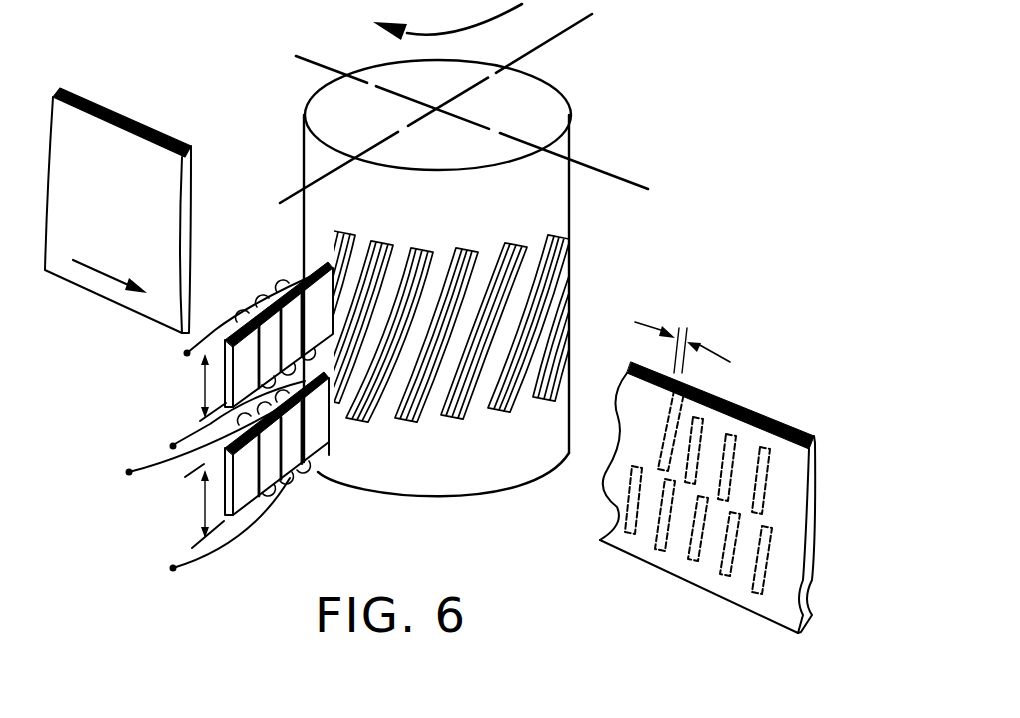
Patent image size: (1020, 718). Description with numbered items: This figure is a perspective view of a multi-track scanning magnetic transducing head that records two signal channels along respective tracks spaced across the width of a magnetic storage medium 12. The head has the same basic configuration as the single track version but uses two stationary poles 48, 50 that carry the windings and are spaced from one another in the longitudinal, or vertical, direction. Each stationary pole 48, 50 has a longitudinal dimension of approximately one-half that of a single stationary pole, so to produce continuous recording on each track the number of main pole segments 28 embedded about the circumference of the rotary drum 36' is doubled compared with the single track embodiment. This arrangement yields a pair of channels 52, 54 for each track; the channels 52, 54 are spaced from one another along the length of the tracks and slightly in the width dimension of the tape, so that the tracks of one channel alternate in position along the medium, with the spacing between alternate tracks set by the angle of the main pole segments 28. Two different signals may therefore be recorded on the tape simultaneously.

The magnetic storage medium 12 is at (100, 140).
The rotary drum 36' is at (478, 250).
The main pole segments 28 is at (452, 231).
The stationary pole 50 is at (316, 263).
The stationary pole 48 is at (316, 425).
The channel 54 is at (698, 420).
The channel 52 is at (728, 573).